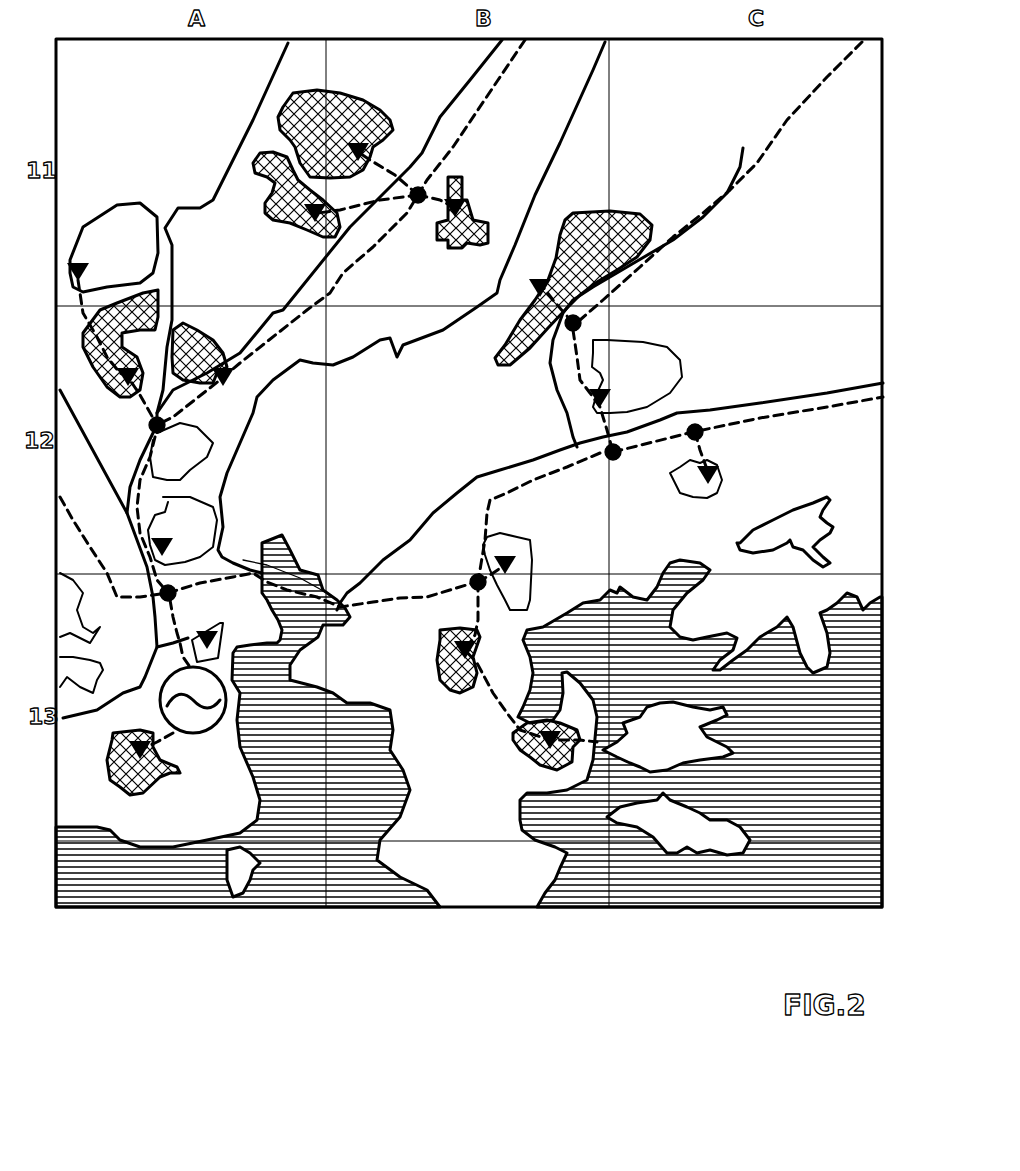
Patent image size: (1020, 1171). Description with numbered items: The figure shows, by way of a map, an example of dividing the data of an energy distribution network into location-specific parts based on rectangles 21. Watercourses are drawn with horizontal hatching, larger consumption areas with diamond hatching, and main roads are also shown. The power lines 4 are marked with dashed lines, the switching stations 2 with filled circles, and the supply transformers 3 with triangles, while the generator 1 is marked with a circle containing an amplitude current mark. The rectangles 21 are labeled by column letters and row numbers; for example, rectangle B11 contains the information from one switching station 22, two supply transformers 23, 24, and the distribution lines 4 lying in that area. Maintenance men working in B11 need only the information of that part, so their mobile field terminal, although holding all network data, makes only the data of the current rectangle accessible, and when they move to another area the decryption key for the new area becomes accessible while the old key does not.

The generator 1 is at (213, 737).
The switching station 2 is at (152, 430).
The supply transformer 3 is at (715, 473).
The power line 4 is at (347, 267).
The rectangle 21 is at (866, 206).
The switching station 22 is at (418, 203).
The supply transformer 23 is at (463, 207).
The supply transformer 24 is at (377, 152).